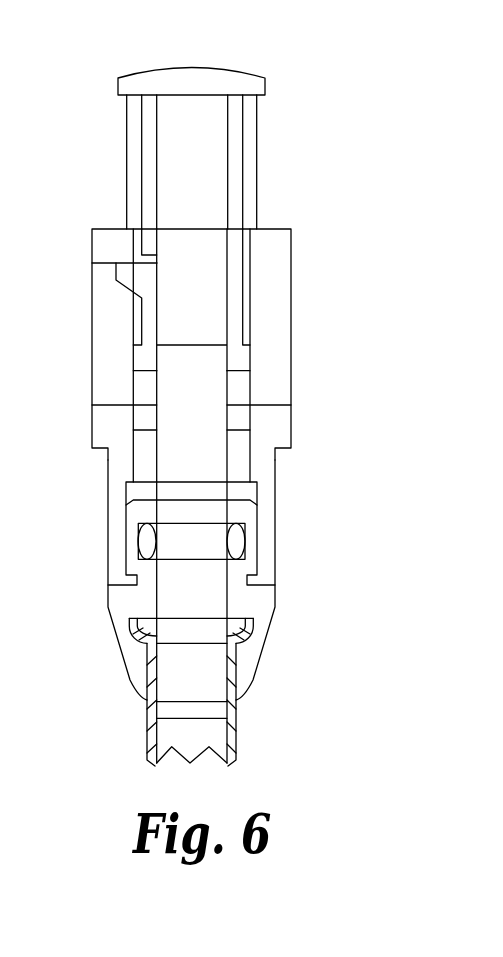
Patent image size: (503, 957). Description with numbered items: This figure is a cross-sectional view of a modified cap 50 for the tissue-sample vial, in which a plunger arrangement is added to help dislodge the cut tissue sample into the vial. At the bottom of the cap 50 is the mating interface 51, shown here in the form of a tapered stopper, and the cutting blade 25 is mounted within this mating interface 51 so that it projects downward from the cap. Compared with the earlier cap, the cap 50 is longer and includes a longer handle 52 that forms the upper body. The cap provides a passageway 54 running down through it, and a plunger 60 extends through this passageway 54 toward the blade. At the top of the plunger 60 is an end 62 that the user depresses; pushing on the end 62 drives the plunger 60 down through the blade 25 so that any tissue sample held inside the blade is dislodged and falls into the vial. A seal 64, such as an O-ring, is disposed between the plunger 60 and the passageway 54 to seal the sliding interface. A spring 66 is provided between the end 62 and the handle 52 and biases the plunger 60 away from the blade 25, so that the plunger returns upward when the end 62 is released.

The cutting blade 25 is at (232, 727).
The cap 50 is at (293, 397).
The mating interface 51 is at (262, 614).
The handle 52 is at (275, 285).
The passageway 54 is at (219, 260).
The plunger 60 is at (204, 456).
The end 62 is at (233, 80).
The seal 64 is at (141, 557).
The spring 66 is at (131, 157).